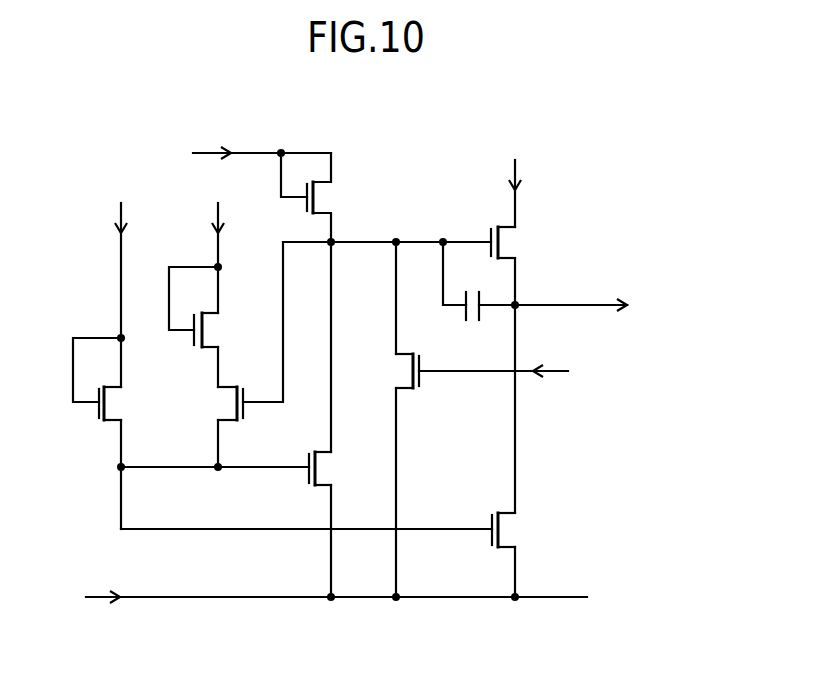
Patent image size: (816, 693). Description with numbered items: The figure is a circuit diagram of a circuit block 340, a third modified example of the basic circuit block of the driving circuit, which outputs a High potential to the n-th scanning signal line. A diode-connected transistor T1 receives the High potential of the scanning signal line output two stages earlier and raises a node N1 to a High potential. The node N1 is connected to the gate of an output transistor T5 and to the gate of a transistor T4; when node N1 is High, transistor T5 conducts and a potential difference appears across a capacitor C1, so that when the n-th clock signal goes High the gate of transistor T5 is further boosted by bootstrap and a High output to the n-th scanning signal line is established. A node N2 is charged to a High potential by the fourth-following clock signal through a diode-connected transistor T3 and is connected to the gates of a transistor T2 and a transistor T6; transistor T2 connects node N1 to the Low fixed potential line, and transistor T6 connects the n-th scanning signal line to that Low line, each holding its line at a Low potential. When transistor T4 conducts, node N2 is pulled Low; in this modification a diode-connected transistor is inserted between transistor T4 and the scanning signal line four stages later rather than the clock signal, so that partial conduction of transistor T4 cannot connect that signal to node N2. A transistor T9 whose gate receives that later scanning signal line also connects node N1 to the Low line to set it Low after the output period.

The circuit block 340 is at (642, 172).
The transistor T1 is at (323, 197).
The transistor T2 is at (337, 468).
The transistor T3 is at (113, 379).
The transistor T4 is at (213, 403).
The transistor T5 is at (521, 242).
The transistor T6 is at (336, 530).
The transistor T9 is at (463, 371).
The capacitor C1 is at (479, 299).
The node N1 is at (387, 227).
The node N2 is at (213, 453).